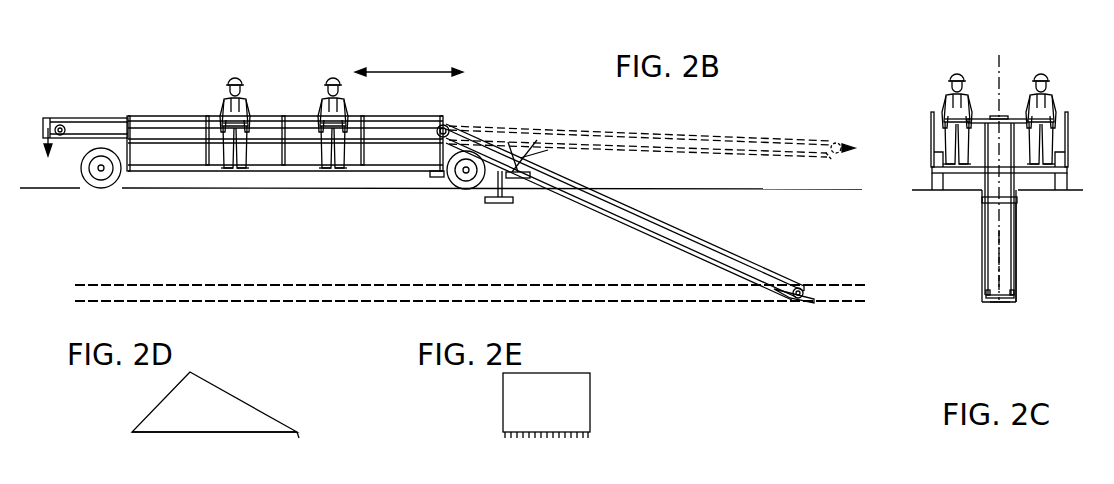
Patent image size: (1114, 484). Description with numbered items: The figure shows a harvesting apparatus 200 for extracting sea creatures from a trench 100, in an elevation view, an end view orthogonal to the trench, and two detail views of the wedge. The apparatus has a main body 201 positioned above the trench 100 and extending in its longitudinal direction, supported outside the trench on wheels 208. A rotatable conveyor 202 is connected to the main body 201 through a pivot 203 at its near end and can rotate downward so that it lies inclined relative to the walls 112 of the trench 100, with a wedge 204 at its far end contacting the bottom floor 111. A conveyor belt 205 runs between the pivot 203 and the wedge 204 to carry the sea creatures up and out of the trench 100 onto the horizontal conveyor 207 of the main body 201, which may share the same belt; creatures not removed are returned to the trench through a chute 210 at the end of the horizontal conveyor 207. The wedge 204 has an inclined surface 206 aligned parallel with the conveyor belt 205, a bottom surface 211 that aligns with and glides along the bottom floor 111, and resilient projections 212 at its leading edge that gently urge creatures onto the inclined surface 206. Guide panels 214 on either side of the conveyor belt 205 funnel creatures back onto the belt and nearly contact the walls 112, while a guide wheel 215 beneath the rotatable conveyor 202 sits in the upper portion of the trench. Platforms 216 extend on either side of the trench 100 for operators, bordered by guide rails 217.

In FIG. 2C, the trench 100 is at (1013, 270).
In FIG. 2B, the bottom floor 111 is at (839, 305).
In FIG. 2C, the bottom floor 111 is at (1003, 307).
In FIG. 2C, the walls 112 is at (1017, 212).
In FIG. 2B, the harvesting apparatus 200 is at (203, 79).
In FIG. 2C, the harvesting apparatus 200 is at (1017, 32).
In FIG. 2C, the main body 201 is at (978, 118).
In FIG. 2B, the rotatable conveyor 202 is at (603, 212).
In FIG. 2B, the pivot 203 is at (448, 126).
In FIG. 2B, the wedge 204 is at (807, 301).
In FIG. 2C, the wedge 204 is at (995, 307).
In FIG. 2E, the wedge 204 is at (582, 407).
In FIG. 2B, the conveyor belt 205 is at (700, 237).
In FIG. 2C, the conveyor belt 205 is at (990, 278).
In FIG. 2B, the inclined surface 206 is at (814, 298).
In FIG. 2D, the inclined surface 206 is at (235, 397).
In FIG. 2B, the horizontal conveyor 207 is at (113, 118).
In FIG. 2B, the wheels 208 is at (80, 168).
In FIG. 2B, the chute 210 is at (67, 118).
In FIG. 2D, the bottom surface 211 is at (200, 433).
In FIG. 2D, the resilient projections 212 is at (299, 433).
In FIG. 2E, the resilient projections 212 is at (582, 438).
In FIG. 2C, the guide panels 214 is at (985, 268).
In FIG. 2B, the guide wheel 215 is at (494, 204).
In FIG. 2C, the guide wheel 215 is at (983, 200).
In FIG. 2B, the platforms 216 is at (172, 171).
In FIG. 2C, the platforms 216 is at (957, 174).
In FIG. 2C, the guide rails 217 is at (930, 122).